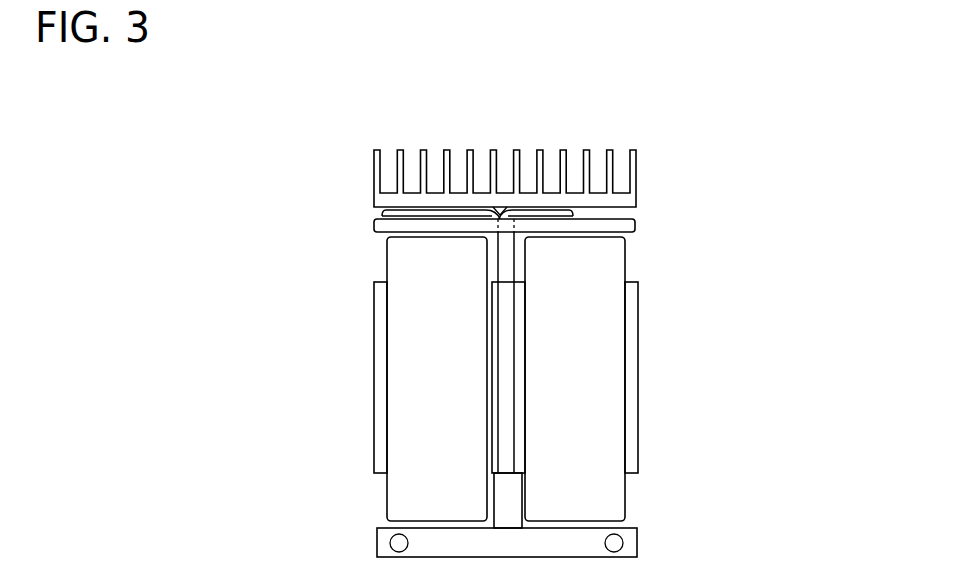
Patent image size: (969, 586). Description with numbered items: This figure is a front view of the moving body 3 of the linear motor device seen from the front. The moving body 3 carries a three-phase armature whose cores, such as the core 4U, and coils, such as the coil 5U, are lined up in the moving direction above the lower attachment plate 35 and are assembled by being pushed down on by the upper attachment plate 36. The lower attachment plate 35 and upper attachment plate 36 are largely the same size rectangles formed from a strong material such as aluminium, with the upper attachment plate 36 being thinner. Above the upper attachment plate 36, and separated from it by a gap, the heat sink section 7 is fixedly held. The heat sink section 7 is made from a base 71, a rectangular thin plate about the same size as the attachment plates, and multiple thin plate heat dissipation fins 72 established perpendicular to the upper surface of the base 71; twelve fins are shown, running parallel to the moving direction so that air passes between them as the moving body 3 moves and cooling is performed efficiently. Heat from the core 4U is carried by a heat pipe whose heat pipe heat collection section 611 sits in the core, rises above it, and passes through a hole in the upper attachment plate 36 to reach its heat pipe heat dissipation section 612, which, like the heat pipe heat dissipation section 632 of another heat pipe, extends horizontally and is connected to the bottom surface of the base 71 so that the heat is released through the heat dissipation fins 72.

The moving body 3 is at (228, 153).
The heat sink section 7 is at (464, 147).
The base 71 is at (395, 198).
The heat dissipation fins 72 is at (400, 166).
The heat pipe heat dissipation section 632 is at (397, 209).
The upper attachment plate 36 is at (395, 225).
The heat pipe heat dissipation section 612 is at (575, 212).
The heat pipe heat collection section 611 is at (508, 265).
The coil 5U is at (419, 483).
The core 4U is at (381, 397).
The lower attachment plate 35 is at (384, 542).